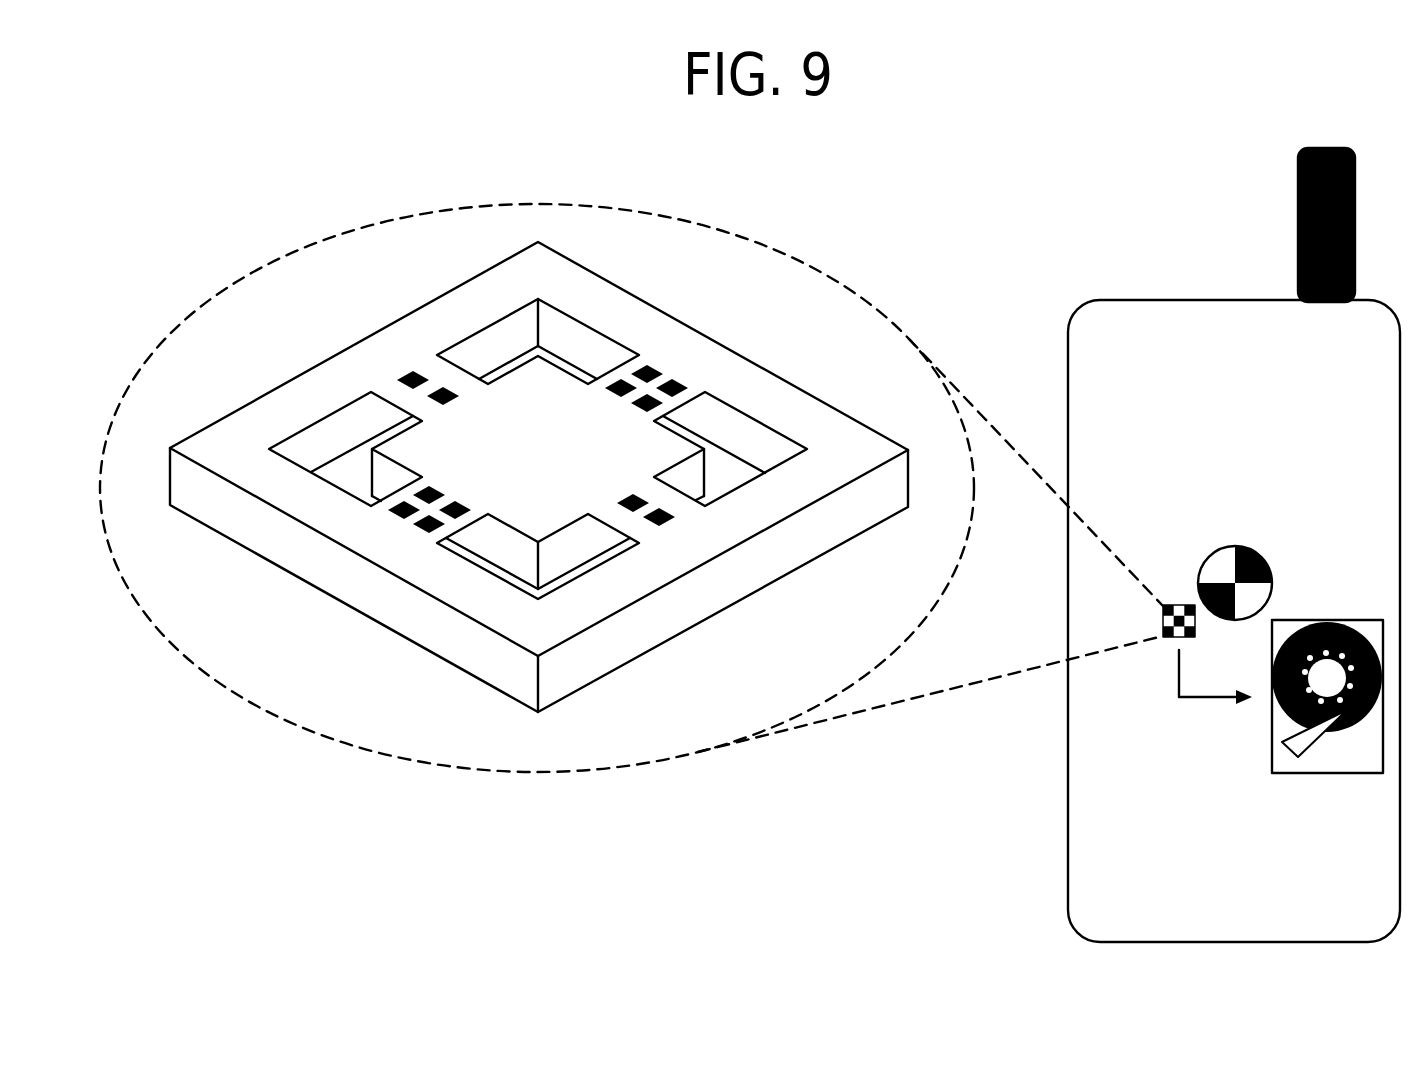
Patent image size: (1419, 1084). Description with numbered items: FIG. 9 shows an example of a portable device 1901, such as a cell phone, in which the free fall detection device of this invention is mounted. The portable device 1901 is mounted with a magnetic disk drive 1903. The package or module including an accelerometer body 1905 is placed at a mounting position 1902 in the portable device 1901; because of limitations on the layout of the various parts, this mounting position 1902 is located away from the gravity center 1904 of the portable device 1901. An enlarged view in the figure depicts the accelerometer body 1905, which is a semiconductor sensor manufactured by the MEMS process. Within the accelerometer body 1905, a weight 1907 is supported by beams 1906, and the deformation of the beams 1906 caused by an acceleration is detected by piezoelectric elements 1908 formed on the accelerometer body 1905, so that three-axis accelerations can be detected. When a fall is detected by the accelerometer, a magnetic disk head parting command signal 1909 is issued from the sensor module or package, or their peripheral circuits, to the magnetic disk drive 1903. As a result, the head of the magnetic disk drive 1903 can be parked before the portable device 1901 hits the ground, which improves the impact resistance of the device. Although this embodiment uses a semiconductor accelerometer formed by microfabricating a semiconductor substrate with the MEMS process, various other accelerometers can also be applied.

The portable device 1901 is at (1162, 300).
The mounting position 1902 is at (1172, 606).
The magnetic disk drive 1903 is at (1320, 774).
The gravity center 1904 is at (1255, 550).
The accelerometer body 1905 is at (247, 420).
The beams 1906 is at (640, 527).
The weight 1907 is at (495, 550).
The piezoelectric elements 1908 is at (405, 372).
The magnetic disk head parting command signal 1909 is at (1197, 700).